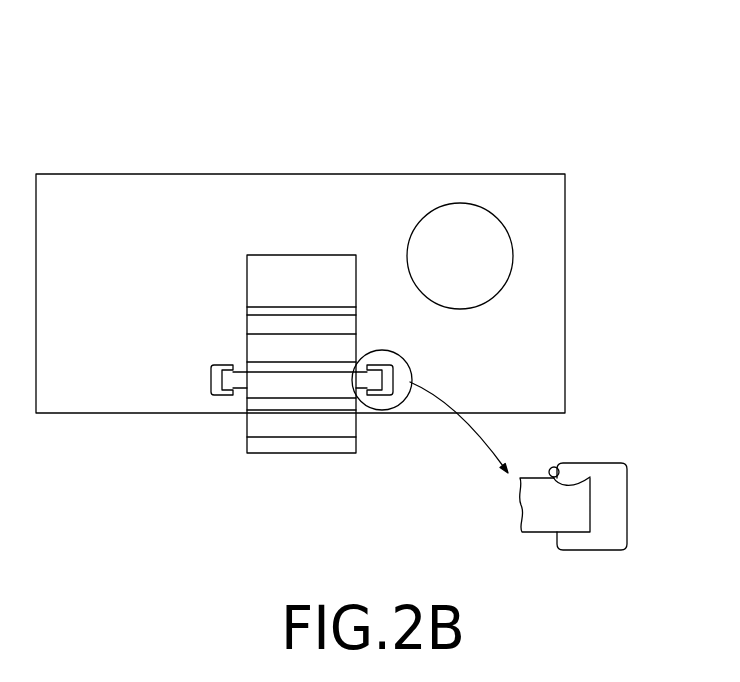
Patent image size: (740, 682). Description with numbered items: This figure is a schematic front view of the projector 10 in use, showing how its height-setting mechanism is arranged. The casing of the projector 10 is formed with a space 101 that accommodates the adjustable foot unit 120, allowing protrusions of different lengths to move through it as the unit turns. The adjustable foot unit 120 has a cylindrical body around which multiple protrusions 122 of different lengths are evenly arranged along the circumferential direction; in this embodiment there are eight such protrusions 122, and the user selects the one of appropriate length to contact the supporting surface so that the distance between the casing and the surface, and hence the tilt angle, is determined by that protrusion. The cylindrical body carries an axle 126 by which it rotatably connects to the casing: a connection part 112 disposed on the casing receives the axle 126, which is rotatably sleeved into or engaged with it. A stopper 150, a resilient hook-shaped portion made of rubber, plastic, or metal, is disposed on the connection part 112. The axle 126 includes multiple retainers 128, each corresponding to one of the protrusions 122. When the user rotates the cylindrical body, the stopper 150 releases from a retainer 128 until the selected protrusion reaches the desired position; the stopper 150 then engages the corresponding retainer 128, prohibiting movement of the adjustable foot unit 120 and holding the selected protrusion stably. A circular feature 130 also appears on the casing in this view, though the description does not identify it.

The projector 10 is at (474, 101).
The space 101 is at (300, 268).
The adjustable foot unit 120 is at (255, 393).
The protrusions 122 is at (257, 433).
The lens 130 is at (503, 257).
The stopper 150 is at (553, 467).
The retainers 128 is at (590, 477).
The connection part 112 is at (618, 508).
The axle 126 is at (537, 528).